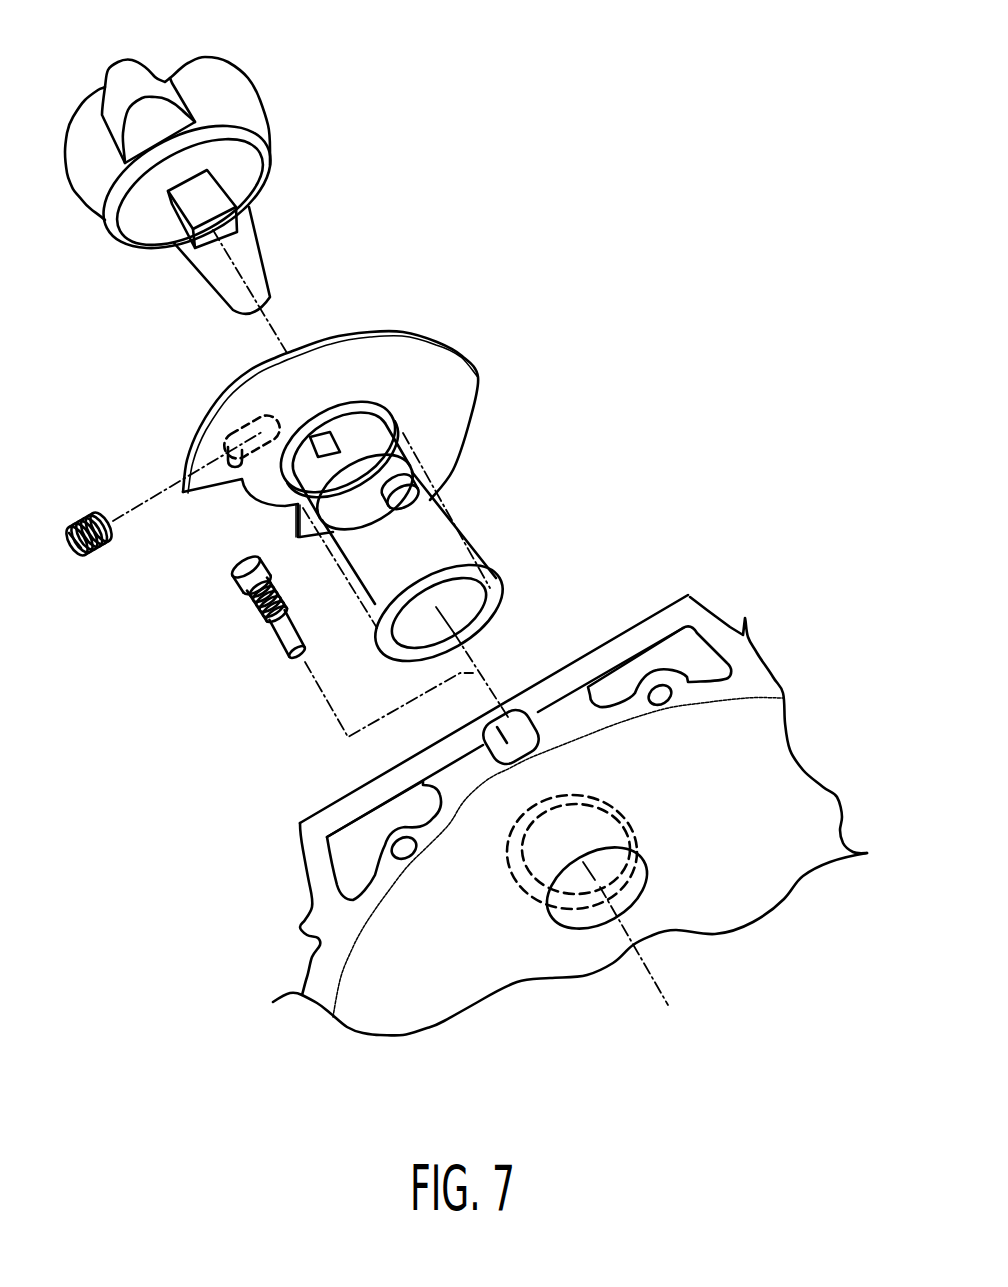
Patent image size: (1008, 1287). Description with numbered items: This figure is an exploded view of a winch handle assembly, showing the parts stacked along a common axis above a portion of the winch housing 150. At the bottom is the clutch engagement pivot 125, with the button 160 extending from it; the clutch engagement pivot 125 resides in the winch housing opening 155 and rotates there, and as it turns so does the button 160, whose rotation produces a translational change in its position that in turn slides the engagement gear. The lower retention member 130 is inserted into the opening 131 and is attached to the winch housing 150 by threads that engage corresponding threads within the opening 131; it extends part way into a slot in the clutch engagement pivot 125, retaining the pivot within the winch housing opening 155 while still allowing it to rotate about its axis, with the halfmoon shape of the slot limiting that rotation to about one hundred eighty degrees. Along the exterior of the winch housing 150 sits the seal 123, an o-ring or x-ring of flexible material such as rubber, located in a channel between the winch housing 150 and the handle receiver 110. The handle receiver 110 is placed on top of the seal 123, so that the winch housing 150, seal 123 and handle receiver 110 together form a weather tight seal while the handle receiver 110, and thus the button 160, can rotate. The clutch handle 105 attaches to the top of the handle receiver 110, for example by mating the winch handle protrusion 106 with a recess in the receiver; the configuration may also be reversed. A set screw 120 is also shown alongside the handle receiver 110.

The clutch handle 105 is at (247, 100).
The winch handle protrusion 106 is at (223, 188).
The handle receiver 110 is at (463, 352).
The set screw 120 is at (83, 517).
The seal 123 is at (487, 590).
The clutch engagement pivot 125 is at (358, 447).
The lower retention member 130 is at (245, 580).
The opening 131 is at (512, 729).
The winch housing 150 is at (380, 1017).
The winch housing opening 155 is at (577, 832).
The button 160 is at (403, 502).